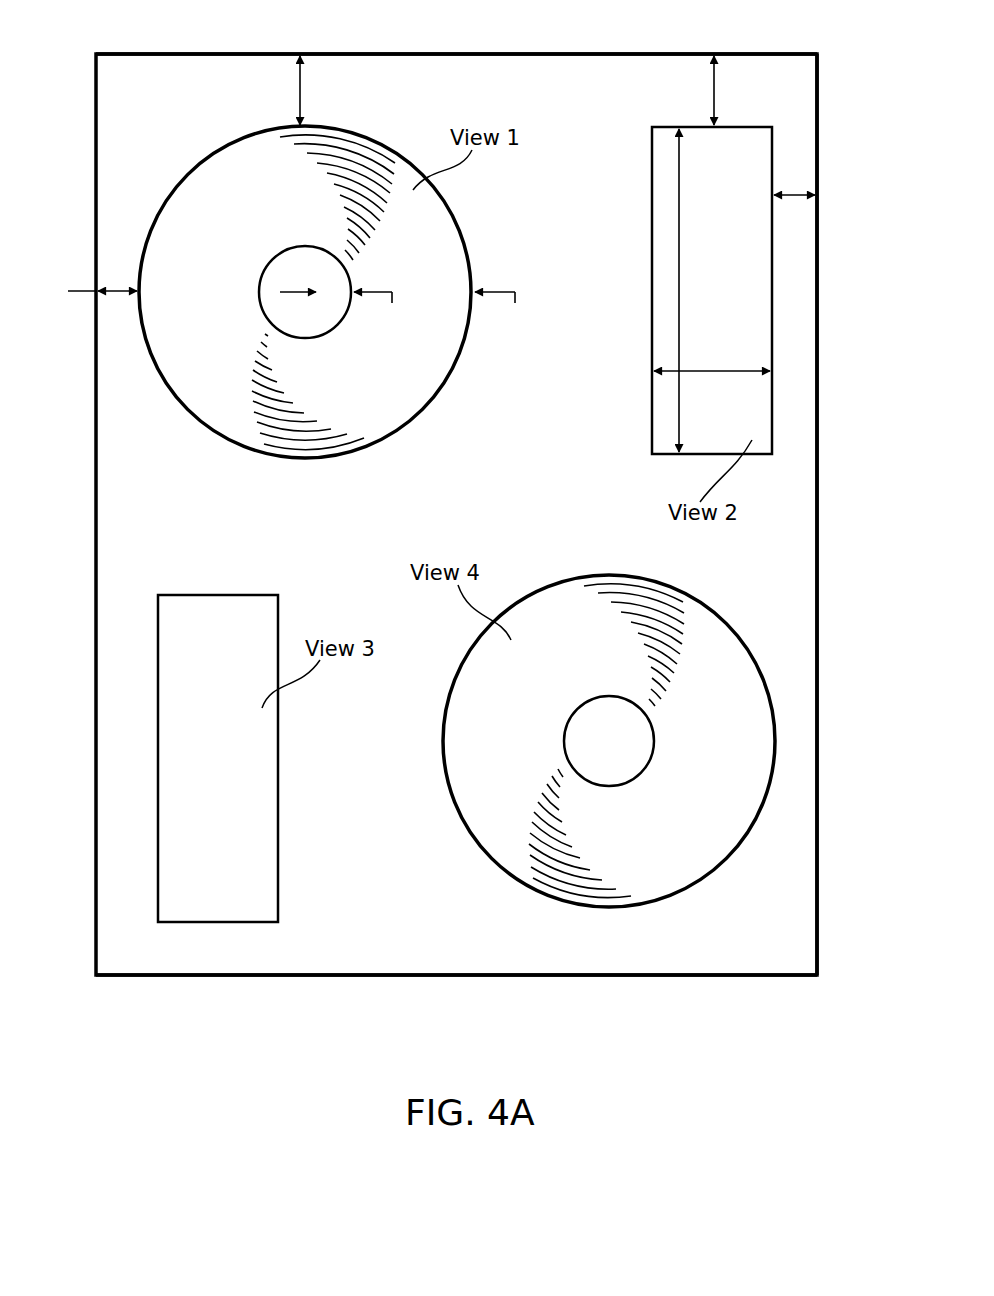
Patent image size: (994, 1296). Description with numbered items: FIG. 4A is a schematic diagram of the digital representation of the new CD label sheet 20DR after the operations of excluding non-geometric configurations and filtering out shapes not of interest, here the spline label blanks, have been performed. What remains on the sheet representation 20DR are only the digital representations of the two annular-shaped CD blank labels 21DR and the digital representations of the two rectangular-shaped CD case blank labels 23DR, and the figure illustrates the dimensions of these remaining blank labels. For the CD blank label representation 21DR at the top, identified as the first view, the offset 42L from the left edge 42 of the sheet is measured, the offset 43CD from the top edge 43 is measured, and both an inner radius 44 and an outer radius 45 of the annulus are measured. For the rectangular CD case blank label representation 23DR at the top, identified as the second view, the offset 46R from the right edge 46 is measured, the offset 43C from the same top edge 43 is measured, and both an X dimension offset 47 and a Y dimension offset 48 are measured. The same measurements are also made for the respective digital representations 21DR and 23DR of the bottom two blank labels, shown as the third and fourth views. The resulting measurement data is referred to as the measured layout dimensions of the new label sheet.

The left edge 42 is at (118, 522).
The top edge 43 is at (125, 76).
The right edge 46 is at (796, 285).
The digital representation of the CD blank label 21DR is at (247, 166).
The digital representation of the CD case blank label 23DR is at (668, 420).
The offset from top edge 43CD is at (302, 80).
The offset from top edge 43C is at (713, 88).
The offset from right edge 46R is at (796, 192).
The X dimension offset 47 is at (680, 230).
The Y dimension offset 48 is at (695, 370).
The offset from left edge 42L is at (85, 290).
The inner radius 44 is at (343, 312).
The outer radius 45 is at (501, 312).
The digital representation of the CD label sheet 20DR is at (632, 950).